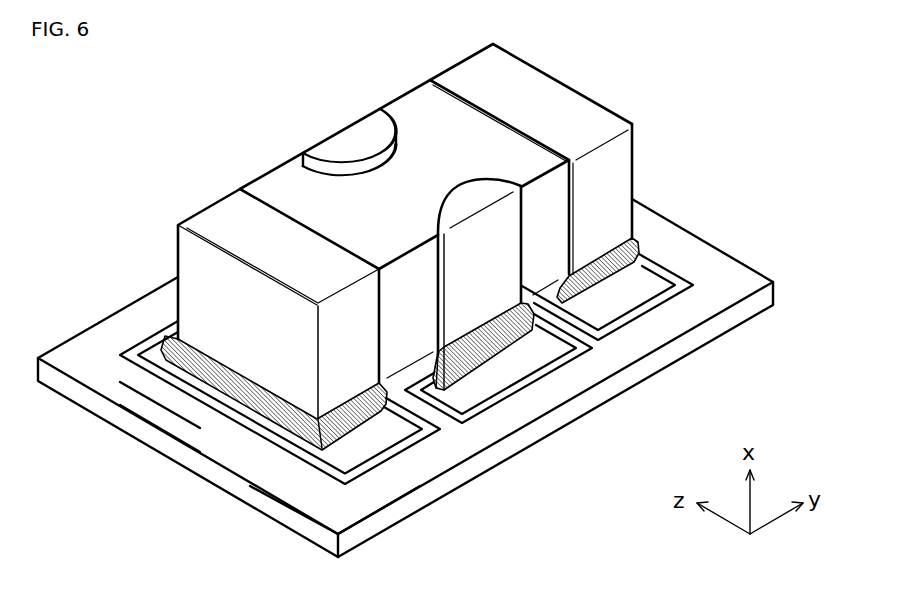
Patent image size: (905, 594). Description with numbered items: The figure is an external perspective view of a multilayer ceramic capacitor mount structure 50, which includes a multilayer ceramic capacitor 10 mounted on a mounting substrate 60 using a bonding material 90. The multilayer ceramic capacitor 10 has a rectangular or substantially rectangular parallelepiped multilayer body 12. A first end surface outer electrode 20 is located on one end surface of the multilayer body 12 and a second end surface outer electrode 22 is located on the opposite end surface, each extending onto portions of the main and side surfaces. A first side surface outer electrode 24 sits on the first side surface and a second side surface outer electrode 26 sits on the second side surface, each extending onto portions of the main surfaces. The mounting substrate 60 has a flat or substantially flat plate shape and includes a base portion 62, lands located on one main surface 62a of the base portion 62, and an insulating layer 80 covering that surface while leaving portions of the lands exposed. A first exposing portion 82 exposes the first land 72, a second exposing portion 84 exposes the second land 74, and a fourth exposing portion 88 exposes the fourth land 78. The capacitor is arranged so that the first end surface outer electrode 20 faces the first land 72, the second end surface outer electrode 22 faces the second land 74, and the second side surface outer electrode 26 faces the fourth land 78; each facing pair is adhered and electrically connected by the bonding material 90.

The multilayer ceramic capacitor 10 is at (277, 128).
The multilayer body 12 is at (402, 98).
The first end surface outer electrode 20 is at (207, 203).
The second end surface outer electrode 22 is at (578, 88).
The first side surface outer electrode 24 is at (342, 119).
The second side surface outer electrode 26 is at (528, 222).
The multilayer ceramic capacitor mount structure 50 is at (109, 121).
The mounting substrate 60 is at (90, 335).
The base portion 62 is at (168, 445).
The one main surface 62a is at (186, 389).
The first land 72 is at (377, 448).
The second land 74 is at (637, 292).
The fourth land 78 is at (500, 383).
The insulating layer 80 is at (313, 501).
The first exposing portion 82 is at (368, 473).
The second exposing portion 84 is at (623, 323).
The fourth exposing portion 88 is at (462, 399).
The bonding material 90 is at (638, 248).